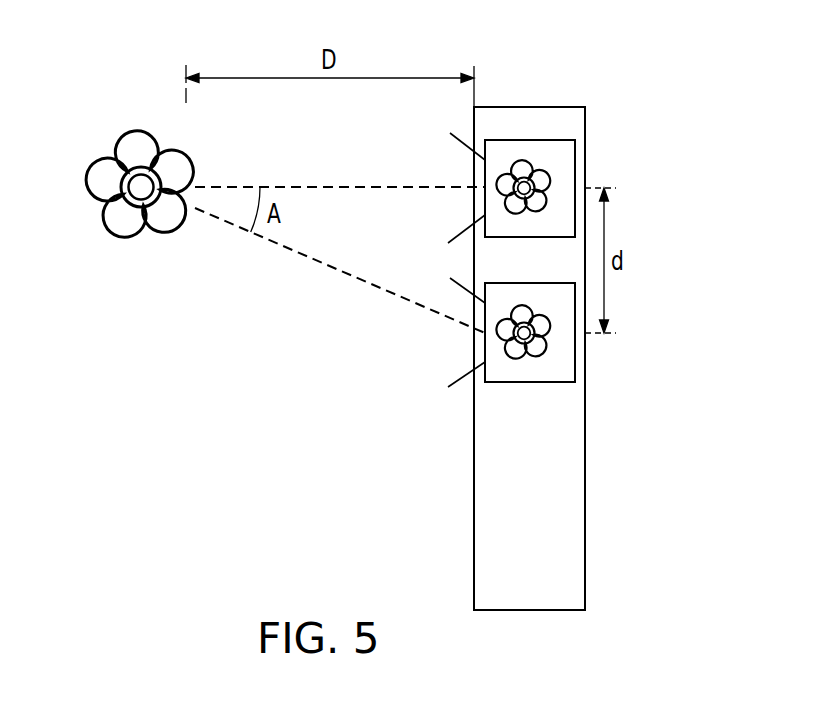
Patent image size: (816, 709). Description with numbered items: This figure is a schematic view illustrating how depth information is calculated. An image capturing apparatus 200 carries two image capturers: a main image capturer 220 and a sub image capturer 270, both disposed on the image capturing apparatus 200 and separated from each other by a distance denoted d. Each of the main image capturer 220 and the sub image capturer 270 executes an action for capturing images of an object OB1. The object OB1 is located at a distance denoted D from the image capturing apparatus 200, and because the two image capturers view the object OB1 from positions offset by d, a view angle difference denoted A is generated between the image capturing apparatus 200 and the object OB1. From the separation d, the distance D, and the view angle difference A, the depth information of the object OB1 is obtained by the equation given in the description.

The image capturing apparatus 200 is at (585, 563).
The main image capturer 220 is at (575, 160).
The sub image capturer 270 is at (575, 365).
The object OB1 is at (133, 242).